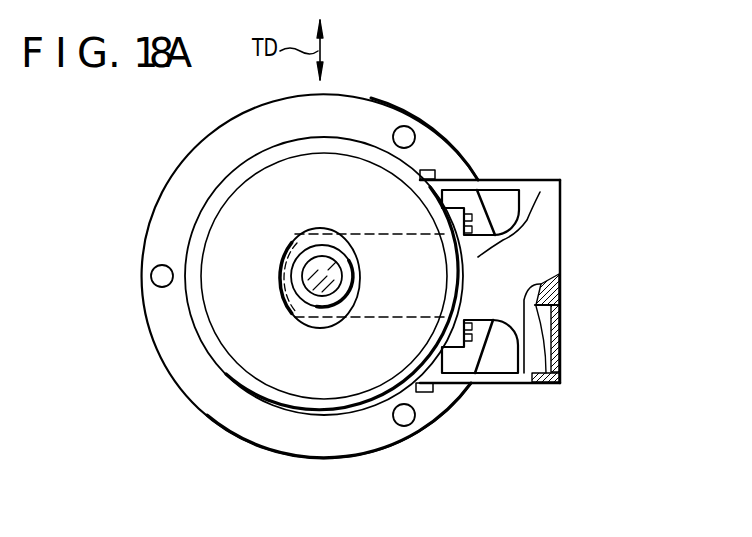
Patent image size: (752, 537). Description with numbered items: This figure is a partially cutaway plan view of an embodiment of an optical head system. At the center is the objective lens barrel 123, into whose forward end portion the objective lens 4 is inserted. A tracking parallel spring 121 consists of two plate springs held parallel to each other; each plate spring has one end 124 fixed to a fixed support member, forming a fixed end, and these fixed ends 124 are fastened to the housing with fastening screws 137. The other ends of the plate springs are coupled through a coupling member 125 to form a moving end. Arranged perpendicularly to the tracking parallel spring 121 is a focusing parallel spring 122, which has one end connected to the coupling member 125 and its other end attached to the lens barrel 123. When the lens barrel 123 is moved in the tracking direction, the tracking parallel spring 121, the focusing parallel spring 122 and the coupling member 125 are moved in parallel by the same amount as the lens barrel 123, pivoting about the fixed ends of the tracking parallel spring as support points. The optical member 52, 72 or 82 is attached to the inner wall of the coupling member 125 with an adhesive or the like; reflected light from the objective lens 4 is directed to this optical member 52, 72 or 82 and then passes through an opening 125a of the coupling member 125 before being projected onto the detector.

The objective lens 4 is at (315, 255).
The objective lens barrel 123 is at (303, 292).
The fastening screws 137 is at (436, 170).
The fixed end 124 is at (438, 177).
The tracking parallel spring 121 is at (495, 183).
The focusing parallel spring 122 is at (540, 192).
The opening of the coupling member 125a is at (562, 287).
The coupling member 125 is at (562, 337).
The optical member 52 is at (623, 380).
The optical member 72 is at (623, 380).
The optical member 82 is at (561, 365).